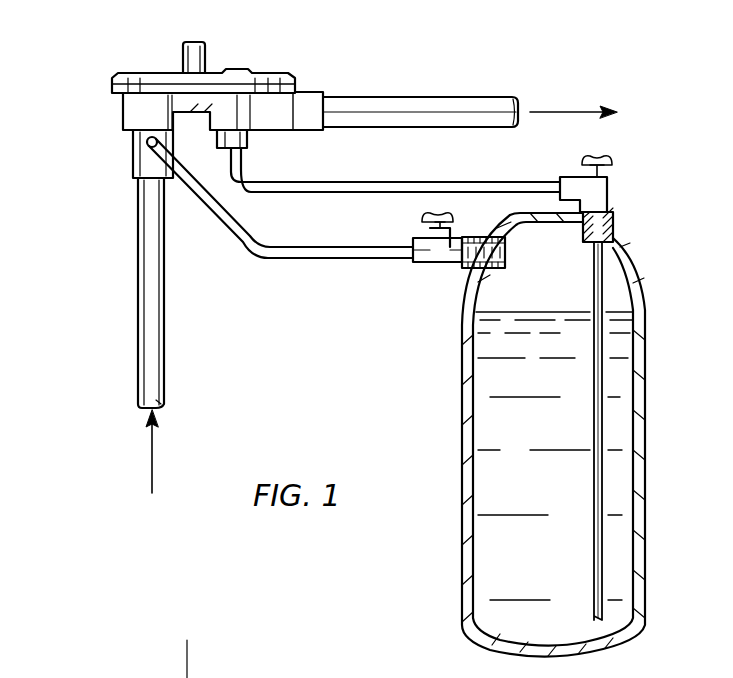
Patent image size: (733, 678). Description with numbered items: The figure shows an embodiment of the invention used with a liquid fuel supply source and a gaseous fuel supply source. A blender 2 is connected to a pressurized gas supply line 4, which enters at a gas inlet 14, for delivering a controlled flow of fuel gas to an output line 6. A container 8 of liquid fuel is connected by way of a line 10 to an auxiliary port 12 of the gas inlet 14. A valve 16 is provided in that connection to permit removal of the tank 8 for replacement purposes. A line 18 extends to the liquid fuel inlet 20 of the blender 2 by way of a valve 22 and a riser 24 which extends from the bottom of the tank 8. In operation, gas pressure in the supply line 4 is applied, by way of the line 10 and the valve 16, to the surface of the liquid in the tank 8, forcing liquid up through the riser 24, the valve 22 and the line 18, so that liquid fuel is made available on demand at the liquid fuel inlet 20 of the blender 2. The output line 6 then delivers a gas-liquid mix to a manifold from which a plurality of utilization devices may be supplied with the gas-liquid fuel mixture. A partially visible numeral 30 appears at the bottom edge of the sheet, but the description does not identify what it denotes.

The blender 2 is at (272, 70).
The pressurized gas supply line 4 is at (152, 303).
The output line 6 is at (423, 110).
The container 8 is at (645, 288).
The line 10 is at (288, 260).
The auxiliary port 12 is at (146, 143).
The gas inlet 14 is at (146, 168).
The valve 16 is at (433, 258).
The line 18 is at (490, 181).
The liquid fuel inlet 20 is at (242, 117).
The valve 22 is at (603, 190).
The riser 24 is at (592, 288).
The label 30 is at (376, 669).